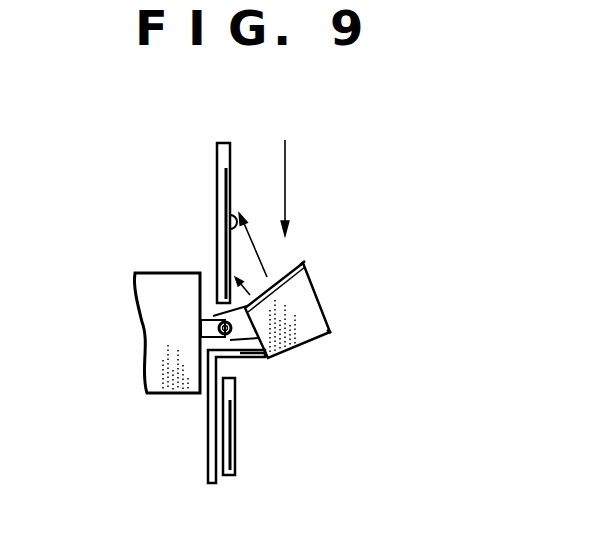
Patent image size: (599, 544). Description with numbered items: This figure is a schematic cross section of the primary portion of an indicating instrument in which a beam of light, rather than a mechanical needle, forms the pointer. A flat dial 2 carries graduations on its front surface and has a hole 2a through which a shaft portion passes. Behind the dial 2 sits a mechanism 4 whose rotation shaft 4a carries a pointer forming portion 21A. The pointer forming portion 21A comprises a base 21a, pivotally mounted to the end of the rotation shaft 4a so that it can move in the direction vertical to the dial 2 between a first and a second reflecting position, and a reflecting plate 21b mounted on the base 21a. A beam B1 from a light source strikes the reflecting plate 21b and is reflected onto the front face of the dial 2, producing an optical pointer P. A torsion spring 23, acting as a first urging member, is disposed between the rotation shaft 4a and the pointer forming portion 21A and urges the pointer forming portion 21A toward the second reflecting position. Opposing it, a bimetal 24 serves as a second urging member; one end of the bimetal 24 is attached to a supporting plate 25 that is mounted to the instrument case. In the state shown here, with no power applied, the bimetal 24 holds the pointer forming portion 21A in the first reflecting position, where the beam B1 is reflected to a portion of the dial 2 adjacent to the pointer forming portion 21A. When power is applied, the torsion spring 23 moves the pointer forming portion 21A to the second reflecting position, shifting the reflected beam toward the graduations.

The dial 2 is at (222, 173).
The optical pointer P is at (229, 222).
The beam B1 is at (288, 180).
The mechanism 4 is at (147, 292).
The rotation shaft 4a is at (203, 333).
The torsion spring 23 is at (212, 320).
The pointer forming portion 21A is at (300, 345).
The reflecting plate 21b is at (303, 264).
The base 21a is at (333, 330).
The supporting plate 25 is at (208, 438).
The bimetal 24 is at (250, 362).
The hole 2a is at (228, 368).